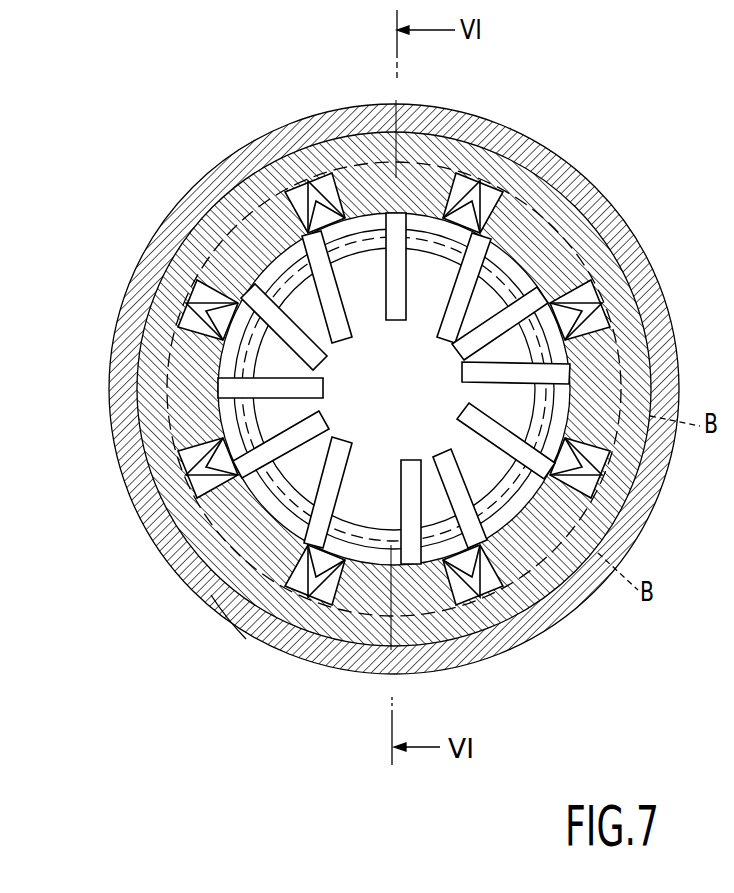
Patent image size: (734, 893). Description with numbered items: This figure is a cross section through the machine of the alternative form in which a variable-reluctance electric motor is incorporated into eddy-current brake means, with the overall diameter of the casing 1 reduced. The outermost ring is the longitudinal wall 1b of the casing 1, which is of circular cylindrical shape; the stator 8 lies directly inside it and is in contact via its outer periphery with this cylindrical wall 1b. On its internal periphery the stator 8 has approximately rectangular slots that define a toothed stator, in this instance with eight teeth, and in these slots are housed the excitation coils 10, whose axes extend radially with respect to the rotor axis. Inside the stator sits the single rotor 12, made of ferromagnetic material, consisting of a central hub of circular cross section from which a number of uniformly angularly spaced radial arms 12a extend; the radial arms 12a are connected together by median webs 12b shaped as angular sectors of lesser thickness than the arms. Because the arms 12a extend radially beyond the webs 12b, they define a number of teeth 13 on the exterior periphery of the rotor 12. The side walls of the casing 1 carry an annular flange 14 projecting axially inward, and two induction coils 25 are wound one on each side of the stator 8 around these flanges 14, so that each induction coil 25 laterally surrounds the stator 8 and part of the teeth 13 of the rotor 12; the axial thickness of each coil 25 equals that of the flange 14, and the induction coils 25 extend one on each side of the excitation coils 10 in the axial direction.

The casing 1 is at (238, 148).
The longitudinal wall 1b is at (480, 150).
The stator 8 is at (367, 175).
The teeth 13 is at (247, 190).
The excitation coils 10 is at (185, 305).
The rotor 12 is at (475, 433).
The radial arms 12a is at (455, 285).
The median webs 12b is at (505, 362).
The annular flange 14 is at (510, 512).
The induction coils 25 is at (245, 627).